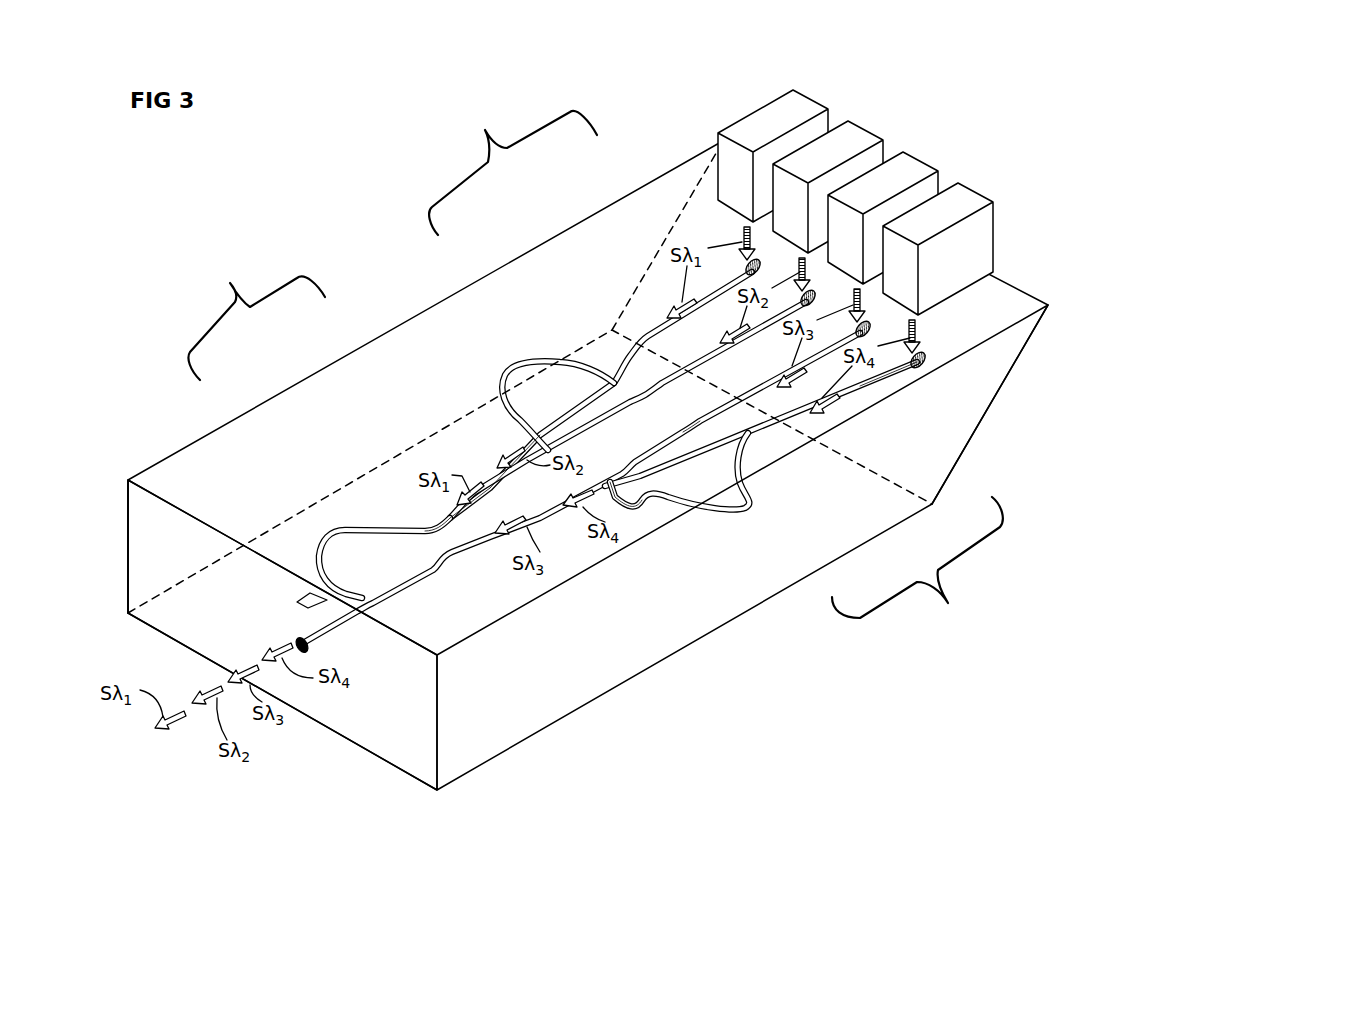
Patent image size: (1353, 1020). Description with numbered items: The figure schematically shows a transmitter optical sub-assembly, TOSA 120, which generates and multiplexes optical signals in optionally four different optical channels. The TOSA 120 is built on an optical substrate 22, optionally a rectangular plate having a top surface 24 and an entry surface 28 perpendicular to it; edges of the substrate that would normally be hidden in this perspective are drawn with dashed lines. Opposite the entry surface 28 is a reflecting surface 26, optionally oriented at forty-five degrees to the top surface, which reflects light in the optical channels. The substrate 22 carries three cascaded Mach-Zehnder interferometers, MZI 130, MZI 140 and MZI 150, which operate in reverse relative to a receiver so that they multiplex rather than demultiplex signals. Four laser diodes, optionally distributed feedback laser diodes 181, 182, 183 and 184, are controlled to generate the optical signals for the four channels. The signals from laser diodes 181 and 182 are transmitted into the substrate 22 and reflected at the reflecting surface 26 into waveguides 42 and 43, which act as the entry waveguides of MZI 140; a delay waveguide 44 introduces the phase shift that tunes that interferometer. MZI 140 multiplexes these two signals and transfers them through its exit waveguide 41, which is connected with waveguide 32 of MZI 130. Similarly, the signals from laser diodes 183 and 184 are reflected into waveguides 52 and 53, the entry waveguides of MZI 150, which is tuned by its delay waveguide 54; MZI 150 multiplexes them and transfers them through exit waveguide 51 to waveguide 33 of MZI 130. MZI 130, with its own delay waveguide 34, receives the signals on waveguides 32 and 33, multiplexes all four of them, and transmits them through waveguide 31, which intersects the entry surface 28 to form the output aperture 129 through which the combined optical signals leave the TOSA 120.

The optical substrate 22 is at (584, 656).
The top surface 24 is at (165, 472).
The reflecting surface 26 is at (968, 385).
The entry surface 28 is at (392, 722).
The waveguide 31 is at (332, 622).
The waveguide 32 is at (490, 497).
The waveguide 33 is at (497, 455).
The delay waveguide 34 is at (357, 520).
The waveguide 41 is at (547, 508).
The waveguide 42 is at (648, 362).
The waveguide 43 is at (685, 368).
The delay waveguide 44 is at (508, 425).
The waveguide 51 is at (603, 488).
The waveguide 52 is at (753, 397).
The waveguide 53 is at (877, 379).
The delay waveguide 54 is at (747, 492).
The TOSA 120 is at (1098, 222).
The output aperture 129 is at (298, 642).
The Mach-Zehnder interferometer 130 is at (223, 272).
The Mach-Zehnder interferometer 140 is at (474, 127).
The Mach-Zehnder interferometer 150 is at (964, 603).
The laser diode 181 is at (800, 98).
The laser diode 182 is at (845, 131).
The laser diode 183 is at (900, 162).
The laser diode 184 is at (962, 192).